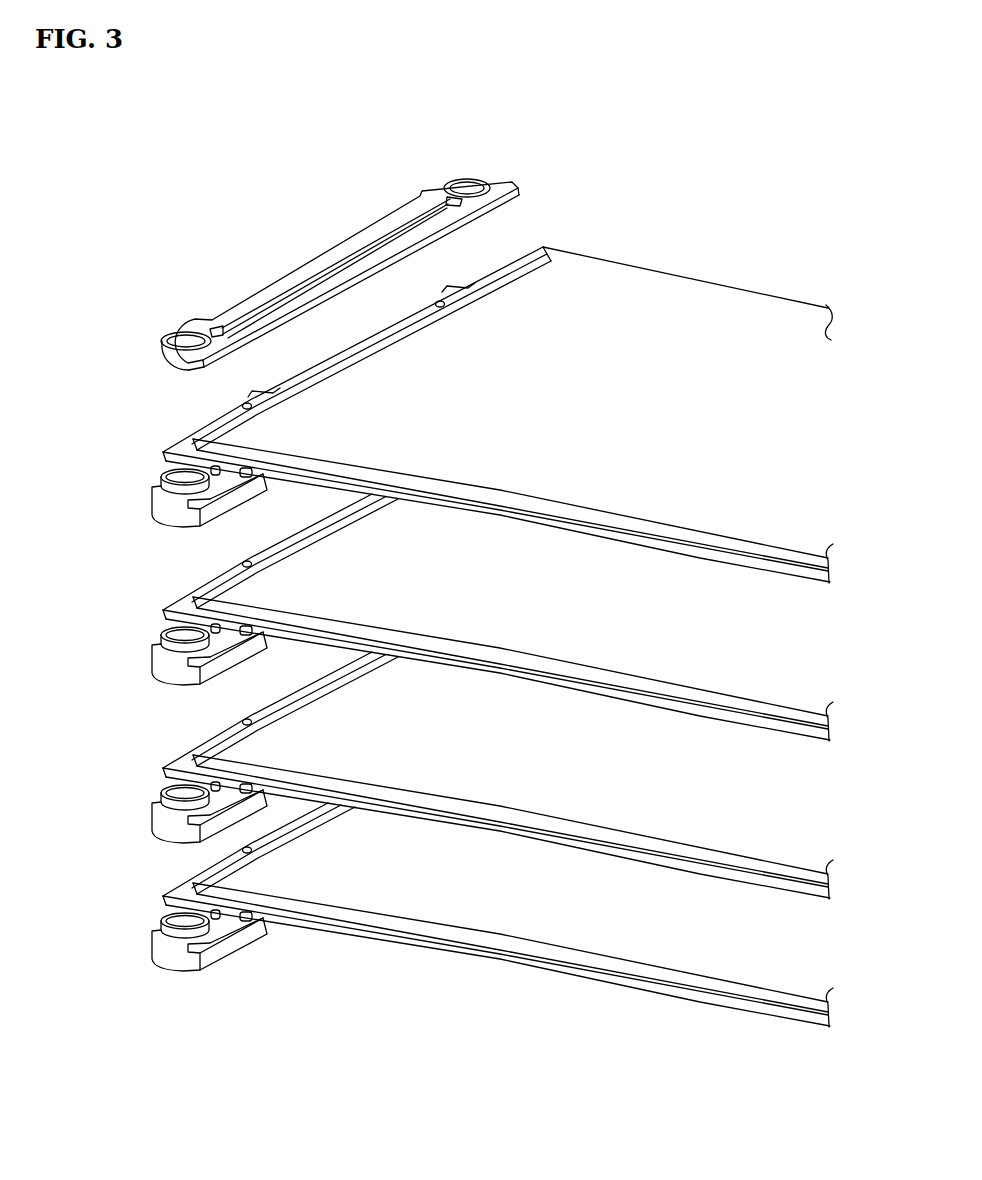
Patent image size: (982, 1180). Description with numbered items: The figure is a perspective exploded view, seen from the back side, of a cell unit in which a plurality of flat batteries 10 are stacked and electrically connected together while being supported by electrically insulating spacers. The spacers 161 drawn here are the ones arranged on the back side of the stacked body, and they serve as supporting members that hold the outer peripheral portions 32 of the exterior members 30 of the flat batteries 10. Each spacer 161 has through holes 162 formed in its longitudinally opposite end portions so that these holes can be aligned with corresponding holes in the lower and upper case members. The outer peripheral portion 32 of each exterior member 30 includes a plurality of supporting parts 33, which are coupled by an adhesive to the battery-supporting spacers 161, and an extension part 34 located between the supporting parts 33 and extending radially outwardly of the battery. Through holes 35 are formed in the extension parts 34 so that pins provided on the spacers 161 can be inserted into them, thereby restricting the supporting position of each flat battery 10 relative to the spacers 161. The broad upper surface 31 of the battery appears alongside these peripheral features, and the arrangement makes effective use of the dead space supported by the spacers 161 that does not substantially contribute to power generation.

The flat battery 10 is at (592, 417).
The exterior member 30 is at (403, 249).
The plate top surface 31 is at (740, 292).
The outer peripheral portion 32 is at (532, 256).
The supporting part 33 is at (480, 285).
The extension part 34 is at (360, 345).
The through hole 35 is at (439, 299).
The spacer 161 is at (163, 350).
The through hole 162 is at (467, 187).